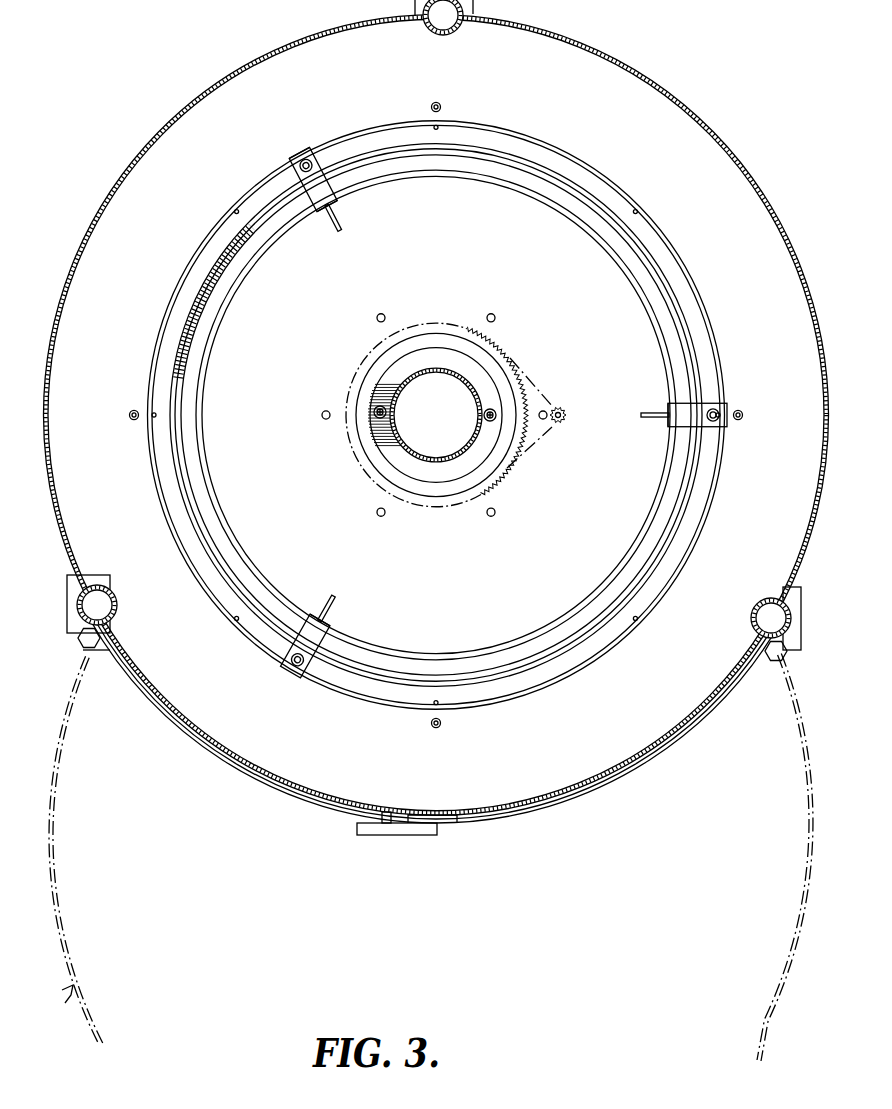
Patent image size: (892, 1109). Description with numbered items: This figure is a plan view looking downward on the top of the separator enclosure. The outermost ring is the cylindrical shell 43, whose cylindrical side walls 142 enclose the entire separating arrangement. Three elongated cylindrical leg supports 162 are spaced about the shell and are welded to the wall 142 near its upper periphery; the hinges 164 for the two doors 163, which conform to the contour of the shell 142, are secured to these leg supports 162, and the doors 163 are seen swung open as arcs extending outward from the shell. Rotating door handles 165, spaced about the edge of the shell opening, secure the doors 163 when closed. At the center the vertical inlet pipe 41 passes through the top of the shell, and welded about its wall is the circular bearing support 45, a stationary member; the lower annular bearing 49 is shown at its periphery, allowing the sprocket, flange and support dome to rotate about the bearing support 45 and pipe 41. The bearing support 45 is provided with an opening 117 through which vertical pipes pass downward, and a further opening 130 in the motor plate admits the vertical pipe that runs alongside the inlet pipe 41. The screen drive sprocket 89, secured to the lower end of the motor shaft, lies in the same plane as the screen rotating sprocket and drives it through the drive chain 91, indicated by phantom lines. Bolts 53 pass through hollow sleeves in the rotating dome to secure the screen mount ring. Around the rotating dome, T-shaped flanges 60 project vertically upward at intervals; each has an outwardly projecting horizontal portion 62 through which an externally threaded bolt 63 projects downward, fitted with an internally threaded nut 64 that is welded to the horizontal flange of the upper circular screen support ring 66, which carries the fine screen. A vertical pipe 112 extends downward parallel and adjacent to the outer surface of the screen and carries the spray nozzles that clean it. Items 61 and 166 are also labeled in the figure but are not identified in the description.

The vertical inlet pipe 41 is at (428, 372).
The cylindrical shell 43 is at (752, 174).
The circular bearing support 45 is at (460, 468).
The lower annular bearing 49 is at (530, 432).
The bolt 53 is at (377, 511).
The T-shaped flange 60 is at (338, 192).
The clamp pin 61 is at (338, 222).
The outwardly projecting horizontal portion 62 is at (312, 212).
The externally threaded bolt 63 is at (292, 163).
The internally threaded nut 64 is at (302, 160).
The upper circular screen support ring 66 is at (613, 651).
The screen drive sprocket 89 is at (568, 415).
The drive chain 91 is at (547, 392).
The vertical pipe 112 is at (450, 108).
The opening 117 is at (377, 407).
The opening 130 is at (490, 410).
The cylindrical side walls 142 is at (106, 200).
The elongated cylindrical leg supports 162 is at (432, 37).
The doors 163 is at (234, 760).
The hinges 164 is at (83, 647).
The rotating door handles 165 is at (372, 835).
The tab 166 is at (382, 819).